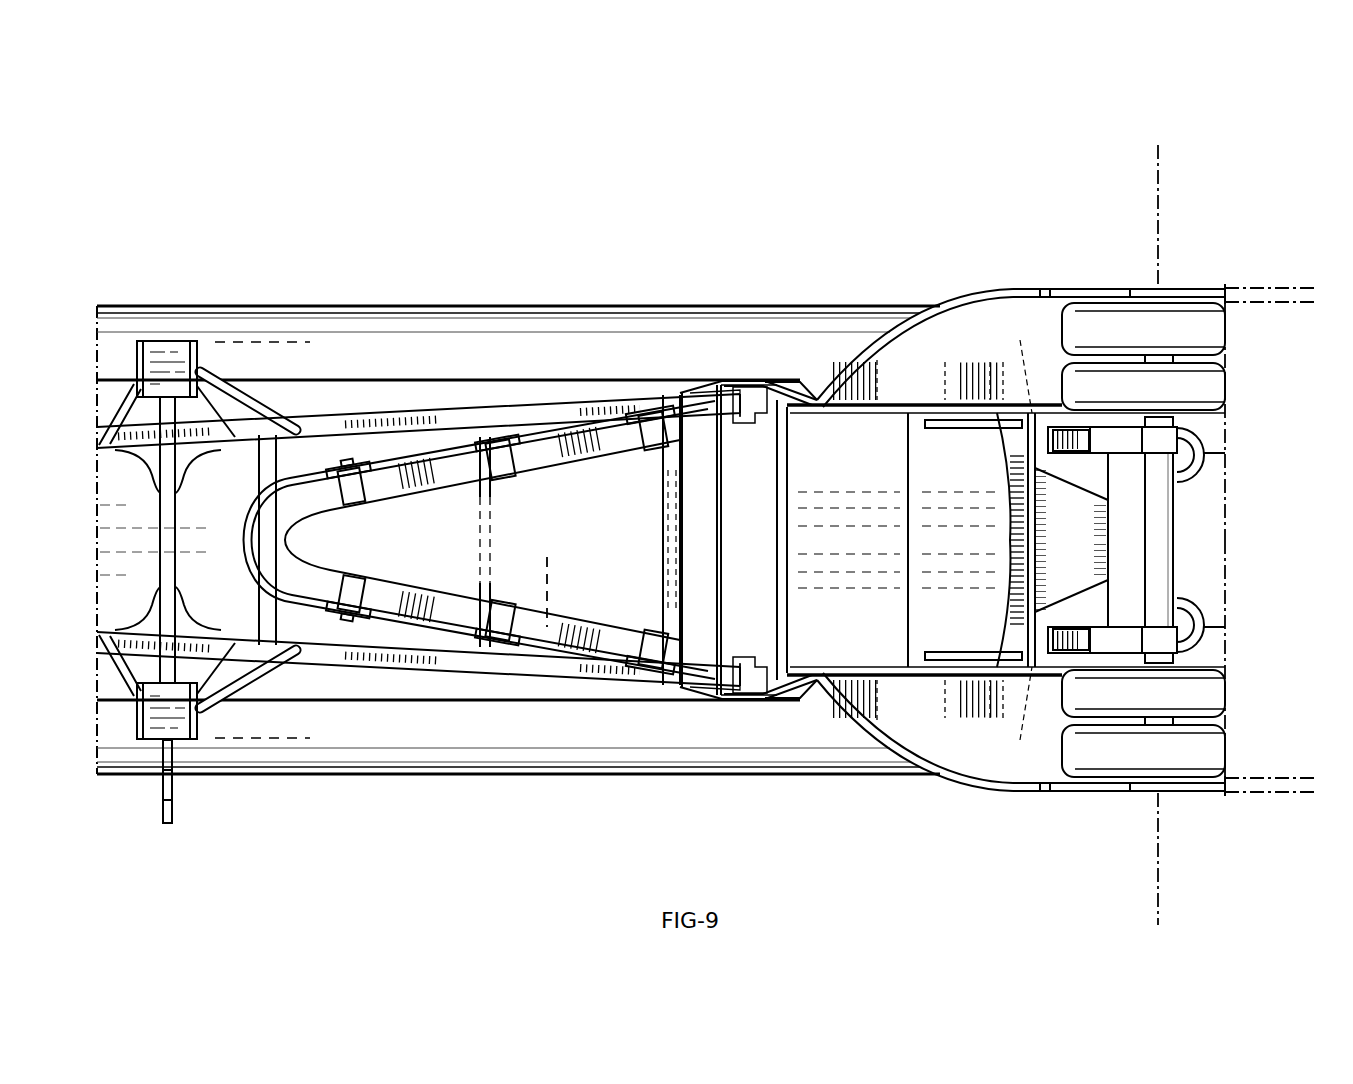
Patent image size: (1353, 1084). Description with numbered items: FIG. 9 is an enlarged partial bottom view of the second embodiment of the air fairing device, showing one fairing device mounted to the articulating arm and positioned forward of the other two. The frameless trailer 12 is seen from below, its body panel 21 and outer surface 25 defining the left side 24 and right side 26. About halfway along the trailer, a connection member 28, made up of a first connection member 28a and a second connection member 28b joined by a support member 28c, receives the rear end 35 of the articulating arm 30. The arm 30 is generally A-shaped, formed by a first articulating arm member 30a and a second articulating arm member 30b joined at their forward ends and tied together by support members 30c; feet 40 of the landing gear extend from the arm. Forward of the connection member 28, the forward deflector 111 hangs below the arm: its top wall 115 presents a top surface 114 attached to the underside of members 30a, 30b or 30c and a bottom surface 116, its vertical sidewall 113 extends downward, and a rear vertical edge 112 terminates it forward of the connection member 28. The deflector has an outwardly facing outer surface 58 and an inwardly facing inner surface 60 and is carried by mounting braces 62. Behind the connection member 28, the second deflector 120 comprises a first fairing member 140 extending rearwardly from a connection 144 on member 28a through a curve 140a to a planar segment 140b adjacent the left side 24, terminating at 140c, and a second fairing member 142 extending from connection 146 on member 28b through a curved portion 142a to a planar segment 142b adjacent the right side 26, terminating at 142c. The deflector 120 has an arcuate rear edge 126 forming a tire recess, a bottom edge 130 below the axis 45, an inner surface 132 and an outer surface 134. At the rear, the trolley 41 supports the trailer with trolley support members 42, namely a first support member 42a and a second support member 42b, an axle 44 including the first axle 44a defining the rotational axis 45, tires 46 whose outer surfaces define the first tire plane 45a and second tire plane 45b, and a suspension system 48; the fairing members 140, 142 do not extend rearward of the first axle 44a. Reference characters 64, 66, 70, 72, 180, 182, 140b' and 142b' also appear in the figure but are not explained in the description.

The frameless trailer 12 is at (480, 792).
The body panel 21 is at (261, 340).
The left side 24 is at (411, 776).
The outer surface 25 is at (308, 758).
The right side 26 is at (411, 297).
The connection member 28 is at (765, 376).
The first connection member 28a is at (793, 693).
The second connection member 28b is at (807, 395).
The support member 28c is at (788, 607).
The articulating arm 30 is at (516, 398).
The first articulating arm member 30a is at (558, 670).
The second articulating arm member 30b is at (558, 412).
The support member 30c is at (492, 508).
The rear end 35 is at (748, 413).
The foot 40 is at (162, 345).
The trailer trolley 41 is at (1180, 452).
The trolley support member 42 is at (1139, 540).
The trolley first support member 42a is at (1218, 645).
The trolley second support member 42b is at (1222, 438).
The axle 44 is at (1176, 519).
The first axle 44a is at (1114, 540).
The rotational axis 45 is at (1160, 150).
The first tire plane 45a is at (1298, 777).
The second tire plane 45b is at (1298, 304).
The tire 46 is at (1196, 320).
The suspension system 48 is at (1188, 615).
The outer surface 58 is at (392, 462).
The inner surface 60 is at (397, 463).
The mounting brace 62 is at (629, 433).
The mounting plate 64 is at (624, 418).
The mounting block 66 is at (636, 428).
The rail end 70 is at (651, 396).
The rail end cap 72 is at (678, 538).
The forward deflector 111 is at (470, 428).
The rear vertical edge 112 is at (678, 394).
The vertical sidewall 113 is at (346, 464).
The top surface 114 is at (537, 581).
The top wall 115 is at (438, 486).
The bottom surface 116 is at (286, 520).
The second deflector 120 is at (904, 294).
The rear edge 126 is at (1042, 287).
The bottom edge 130 is at (902, 328).
The inner surface 132 is at (960, 304).
The outer surface 134 is at (950, 300).
The first fairing member 140 is at (934, 777).
The curve 140a is at (883, 752).
The planar segment 140b is at (1119, 854).
The lower arm rail extension 140b' is at (1275, 819).
The terminus 140c is at (1088, 793).
The second fairing member 142 is at (904, 294).
The curved portion 142a is at (868, 300).
The planar segment 142b is at (1119, 227).
The upper arm rail extension 142b' is at (1275, 260).
The terminus 142c is at (1090, 287).
The connection 144 is at (890, 772).
The connection 146 is at (904, 294).
The wheel well 180 is at (1020, 335).
The rail seam 182 is at (1128, 287).